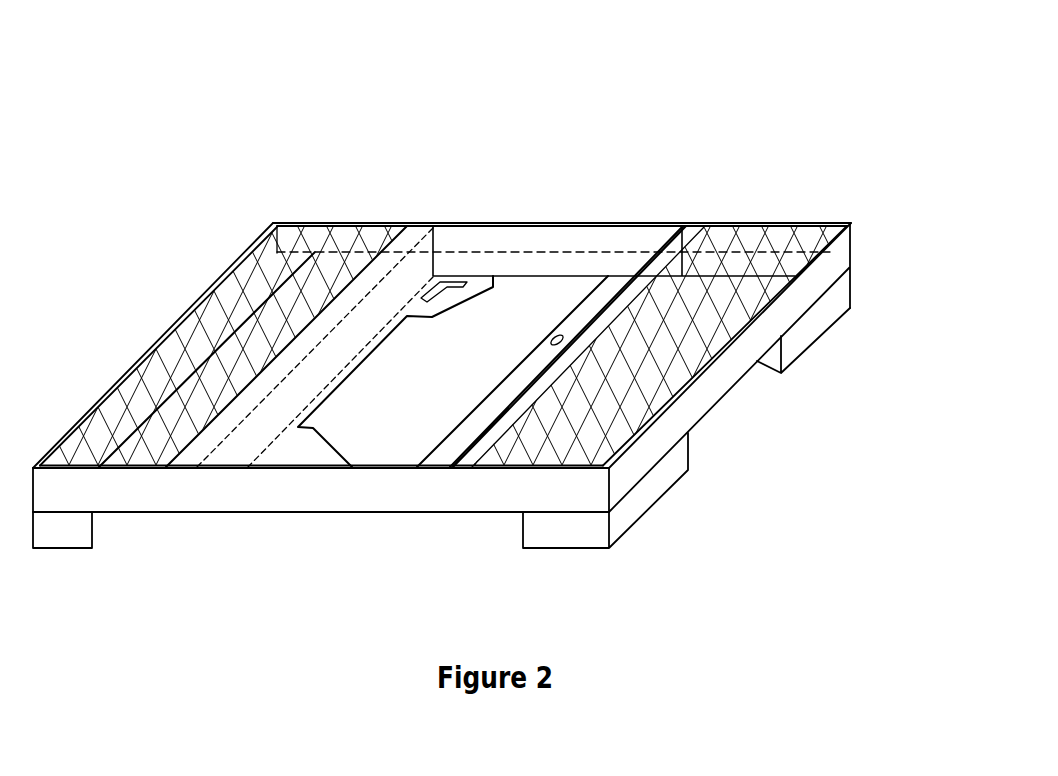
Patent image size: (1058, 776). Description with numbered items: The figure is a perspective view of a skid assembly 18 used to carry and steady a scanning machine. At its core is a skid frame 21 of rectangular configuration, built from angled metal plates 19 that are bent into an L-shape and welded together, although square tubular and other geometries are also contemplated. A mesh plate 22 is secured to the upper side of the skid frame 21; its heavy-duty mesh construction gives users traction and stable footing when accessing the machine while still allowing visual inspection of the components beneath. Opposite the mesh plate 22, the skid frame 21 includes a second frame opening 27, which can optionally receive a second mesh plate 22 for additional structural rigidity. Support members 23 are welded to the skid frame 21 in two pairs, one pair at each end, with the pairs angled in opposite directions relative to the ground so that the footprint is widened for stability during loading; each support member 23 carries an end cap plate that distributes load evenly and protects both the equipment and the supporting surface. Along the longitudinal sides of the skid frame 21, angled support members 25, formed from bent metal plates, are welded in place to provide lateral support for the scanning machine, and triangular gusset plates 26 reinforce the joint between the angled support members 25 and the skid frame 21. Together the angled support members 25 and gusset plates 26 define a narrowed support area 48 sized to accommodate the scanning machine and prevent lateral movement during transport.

The skid assembly 18 is at (794, 50).
The angled metal plates 19 is at (552, 236).
The skid frame 21 is at (580, 380).
The mesh plate 22 is at (248, 332).
The support members 23 is at (827, 306).
The angled support members 25 is at (315, 363).
The triangular gusset plates 26 is at (442, 302).
The second frame opening 27 is at (585, 443).
The narrowed support area 48 is at (383, 435).